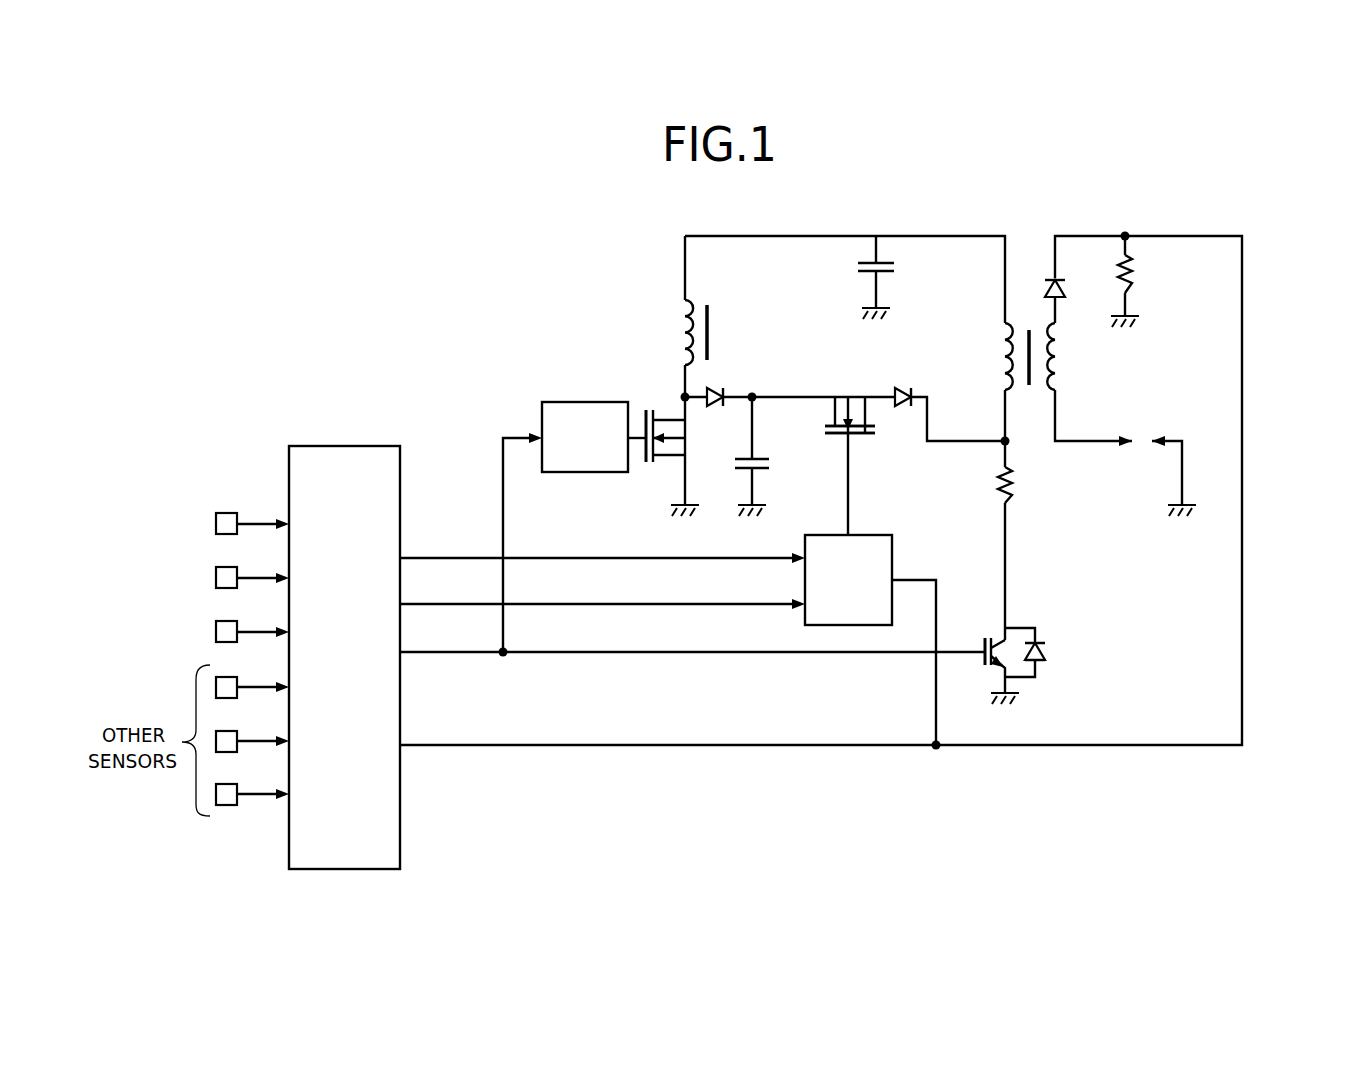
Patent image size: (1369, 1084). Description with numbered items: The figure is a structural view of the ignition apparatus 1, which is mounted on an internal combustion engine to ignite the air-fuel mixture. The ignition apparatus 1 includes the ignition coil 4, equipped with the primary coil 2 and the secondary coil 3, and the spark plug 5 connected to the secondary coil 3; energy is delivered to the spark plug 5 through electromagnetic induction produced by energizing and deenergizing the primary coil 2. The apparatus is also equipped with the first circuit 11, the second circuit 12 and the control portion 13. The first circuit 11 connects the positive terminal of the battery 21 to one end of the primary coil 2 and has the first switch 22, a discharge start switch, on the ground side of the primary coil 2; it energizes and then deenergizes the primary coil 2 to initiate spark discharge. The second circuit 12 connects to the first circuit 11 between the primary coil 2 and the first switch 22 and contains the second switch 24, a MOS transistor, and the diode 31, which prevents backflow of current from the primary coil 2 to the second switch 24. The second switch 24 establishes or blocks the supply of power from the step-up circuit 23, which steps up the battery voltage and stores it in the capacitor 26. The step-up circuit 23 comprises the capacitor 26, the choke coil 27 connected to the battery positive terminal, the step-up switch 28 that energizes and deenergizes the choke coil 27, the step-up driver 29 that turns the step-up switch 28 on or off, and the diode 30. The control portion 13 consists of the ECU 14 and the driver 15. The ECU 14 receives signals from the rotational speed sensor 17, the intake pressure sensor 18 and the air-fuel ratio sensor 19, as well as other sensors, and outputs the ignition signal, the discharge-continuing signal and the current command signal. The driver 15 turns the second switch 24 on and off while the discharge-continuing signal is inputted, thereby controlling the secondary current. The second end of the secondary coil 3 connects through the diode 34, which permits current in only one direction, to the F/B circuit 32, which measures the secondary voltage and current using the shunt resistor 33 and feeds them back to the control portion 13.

The ignition apparatus 1 is at (226, 340).
The primary coil 2 is at (1002, 328).
The secondary coil 3 is at (1058, 342).
The ignition coil 4 is at (1031, 297).
The spark plug 5 is at (1140, 432).
The first circuit 11 is at (1025, 562).
The second circuit 12 is at (810, 380).
The control portion 13 is at (442, 591).
The electronic control unit (ECU) 14 is at (353, 463).
The driver 15 is at (867, 552).
The rotational speed sensor 17 is at (214, 526).
The intake pressure sensor 18 is at (214, 580).
The air-fuel ratio sensor 19 is at (214, 635).
The battery 21 is at (892, 253).
The first switch 22 is at (984, 644).
The step-up circuit 23 is at (660, 302).
The second switch 24 is at (835, 438).
The capacitor 26 is at (764, 462).
The choke coil 27 is at (700, 300).
The step-up switch 28 is at (637, 410).
The step-up driver 29 is at (575, 418).
The diode 30 is at (716, 386).
The diode 31 is at (898, 388).
The F/B circuit 32 is at (1265, 342).
The shunt resistor 33 is at (1130, 265).
The diode 34 is at (1065, 296).